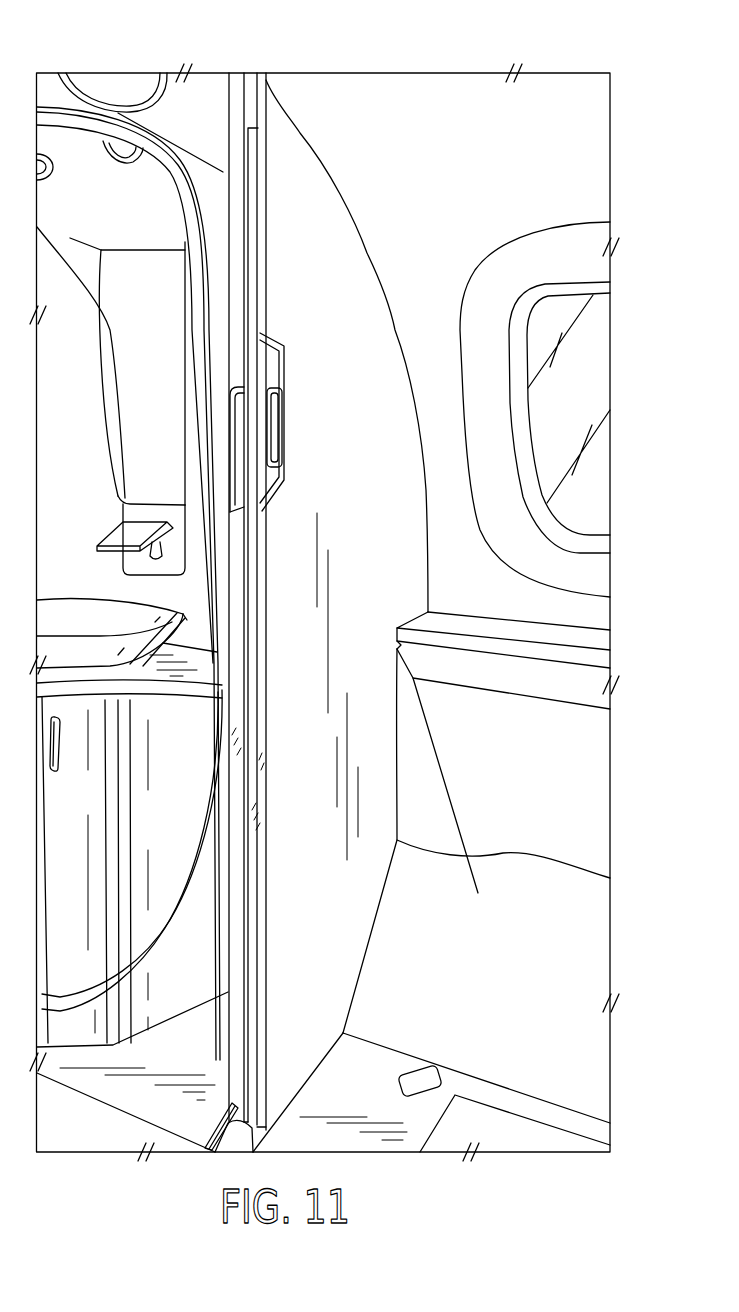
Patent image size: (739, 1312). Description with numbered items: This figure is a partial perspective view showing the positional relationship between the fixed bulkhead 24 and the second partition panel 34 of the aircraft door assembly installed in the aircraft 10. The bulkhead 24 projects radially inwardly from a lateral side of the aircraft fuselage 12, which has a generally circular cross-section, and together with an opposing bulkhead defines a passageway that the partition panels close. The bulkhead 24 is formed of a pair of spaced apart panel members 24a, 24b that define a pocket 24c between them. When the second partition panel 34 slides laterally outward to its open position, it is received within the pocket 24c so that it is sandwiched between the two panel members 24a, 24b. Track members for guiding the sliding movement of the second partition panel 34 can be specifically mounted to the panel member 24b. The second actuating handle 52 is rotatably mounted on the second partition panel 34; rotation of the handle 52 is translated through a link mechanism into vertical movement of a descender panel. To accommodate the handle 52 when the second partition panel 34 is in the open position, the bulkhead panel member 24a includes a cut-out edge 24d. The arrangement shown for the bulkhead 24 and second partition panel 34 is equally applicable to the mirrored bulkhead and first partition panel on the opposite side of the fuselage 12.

The aircraft 10 is at (437, 62).
The aircraft fuselage 12 is at (585, 186).
The fixed bulkhead 24 is at (348, 262).
The panel member 24a is at (328, 965).
The panel member 24b is at (228, 924).
The pocket 24c is at (248, 112).
The cut-out edge 24d is at (287, 372).
The second partition panel 34 is at (287, 491).
The second actuating handle 52 is at (285, 421).